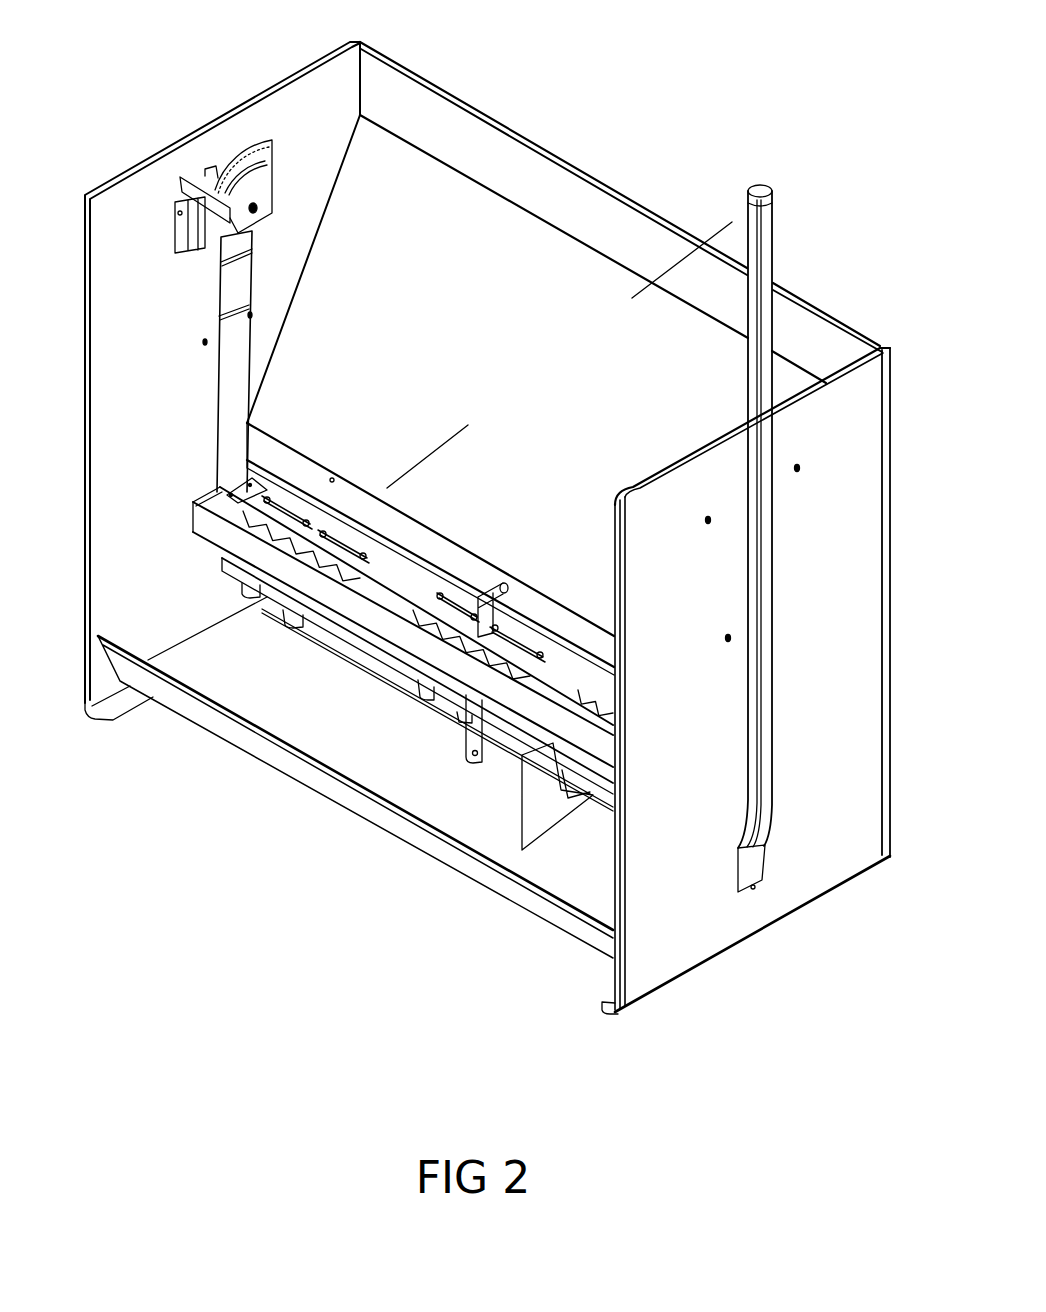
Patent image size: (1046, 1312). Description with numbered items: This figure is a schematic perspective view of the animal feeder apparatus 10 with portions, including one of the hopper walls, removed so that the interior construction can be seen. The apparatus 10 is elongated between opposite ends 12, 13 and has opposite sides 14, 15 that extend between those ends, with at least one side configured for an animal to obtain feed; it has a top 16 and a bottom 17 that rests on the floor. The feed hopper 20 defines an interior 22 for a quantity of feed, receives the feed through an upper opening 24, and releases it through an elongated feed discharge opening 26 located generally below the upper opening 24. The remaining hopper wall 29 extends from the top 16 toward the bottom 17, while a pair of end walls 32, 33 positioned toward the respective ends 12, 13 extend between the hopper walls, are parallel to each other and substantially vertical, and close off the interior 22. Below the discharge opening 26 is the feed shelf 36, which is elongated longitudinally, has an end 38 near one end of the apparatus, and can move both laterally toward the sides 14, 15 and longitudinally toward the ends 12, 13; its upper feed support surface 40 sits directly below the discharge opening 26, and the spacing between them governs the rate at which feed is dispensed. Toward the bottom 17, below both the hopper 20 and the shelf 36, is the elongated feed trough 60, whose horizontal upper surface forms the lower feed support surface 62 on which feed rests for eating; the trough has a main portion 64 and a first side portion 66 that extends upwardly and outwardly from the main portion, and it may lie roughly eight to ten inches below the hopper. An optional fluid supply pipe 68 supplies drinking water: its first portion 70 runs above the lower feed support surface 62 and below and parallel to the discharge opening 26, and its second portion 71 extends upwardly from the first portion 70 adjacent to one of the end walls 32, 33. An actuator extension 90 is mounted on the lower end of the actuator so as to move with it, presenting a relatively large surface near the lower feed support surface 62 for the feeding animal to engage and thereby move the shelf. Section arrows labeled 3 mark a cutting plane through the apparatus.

The section line 3- 3 is at (732, 222).
The animal feeder apparatus 10 is at (633, 83).
The end 12 is at (175, 110).
The end 13 is at (828, 905).
The side 14 is at (313, 902).
The side 15 is at (807, 290).
The top 16 is at (520, 112).
The bottom 17 is at (637, 1015).
The feed hopper 20 is at (558, 202).
The interior 22 is at (480, 227).
The upper opening 24 is at (440, 137).
The feed discharge opening 26 is at (597, 623).
The hopper wall 29 is at (373, 167).
The end wall 32 is at (273, 120).
The end wall 33 is at (850, 463).
The feed shelf 36 is at (333, 601).
The end 38 is at (205, 530).
The upper feed support surface 40 is at (573, 692).
The feed trough 60 is at (472, 887).
The lower feed support surface 62 is at (333, 748).
The main portion 64 is at (382, 775).
The first side portion 66 is at (377, 813).
The fluid supply pipe 68 is at (773, 713).
The first portion 70 is at (265, 598).
The second portion 71 is at (765, 782).
The actuator extension 90 is at (538, 807).